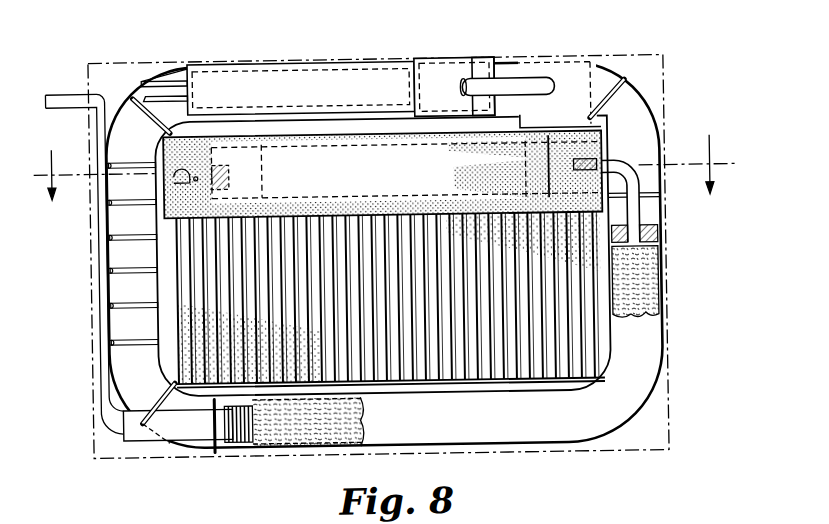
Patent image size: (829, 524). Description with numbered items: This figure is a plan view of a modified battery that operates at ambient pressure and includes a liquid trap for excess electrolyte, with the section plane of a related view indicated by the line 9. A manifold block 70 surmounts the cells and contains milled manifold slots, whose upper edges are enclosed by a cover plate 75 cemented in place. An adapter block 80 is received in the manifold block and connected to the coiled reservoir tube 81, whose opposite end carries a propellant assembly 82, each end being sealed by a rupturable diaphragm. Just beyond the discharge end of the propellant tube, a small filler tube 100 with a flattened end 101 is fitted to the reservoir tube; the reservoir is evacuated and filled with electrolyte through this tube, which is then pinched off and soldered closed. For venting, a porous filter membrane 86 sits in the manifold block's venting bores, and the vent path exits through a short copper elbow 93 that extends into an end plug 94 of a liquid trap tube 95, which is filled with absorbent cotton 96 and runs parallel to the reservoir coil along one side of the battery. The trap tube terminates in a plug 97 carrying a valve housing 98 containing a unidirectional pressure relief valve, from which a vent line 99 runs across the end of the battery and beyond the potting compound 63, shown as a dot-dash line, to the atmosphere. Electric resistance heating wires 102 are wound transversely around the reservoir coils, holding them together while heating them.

The section line 9- 9 is at (384, 155).
The potting compound 63 is at (668, 438).
The manifold block 70 is at (239, 138).
The cover plate 75 is at (312, 157).
The adapter block 80 is at (552, 117).
The reservoir tube 81 is at (630, 113).
The propellant assembly 82 is at (327, 90).
The porous filter membrane 86 is at (218, 197).
The copper elbow 93 is at (632, 189).
The end plug 94 is at (660, 238).
The liquid trap tube 95 is at (636, 392).
The absorbent cotton 96 is at (315, 430).
The plug 97 is at (247, 450).
The valve housing 98 is at (172, 427).
The vent line 99 is at (108, 252).
The filler tube 100 is at (533, 82).
The flattened end 101 is at (474, 78).
The electric resistance heating wires 102 is at (627, 83).